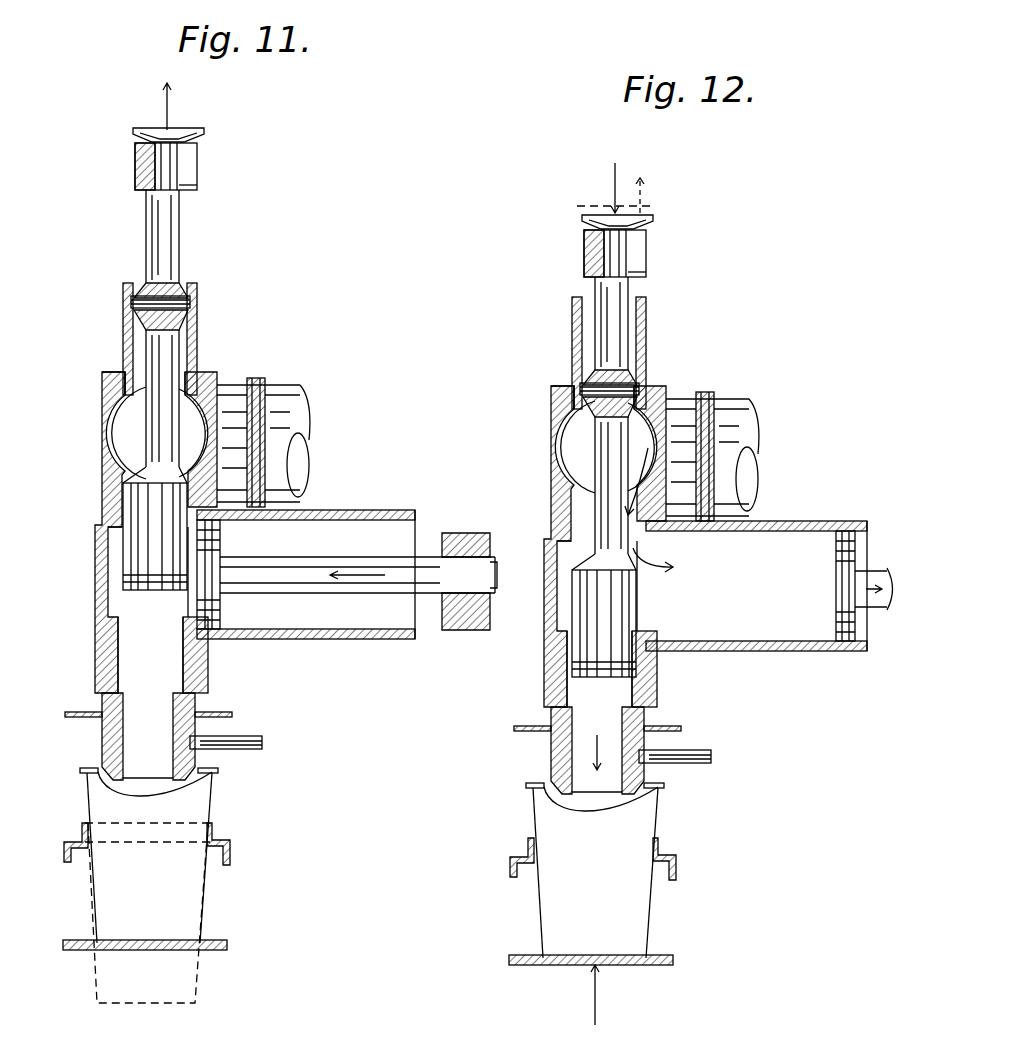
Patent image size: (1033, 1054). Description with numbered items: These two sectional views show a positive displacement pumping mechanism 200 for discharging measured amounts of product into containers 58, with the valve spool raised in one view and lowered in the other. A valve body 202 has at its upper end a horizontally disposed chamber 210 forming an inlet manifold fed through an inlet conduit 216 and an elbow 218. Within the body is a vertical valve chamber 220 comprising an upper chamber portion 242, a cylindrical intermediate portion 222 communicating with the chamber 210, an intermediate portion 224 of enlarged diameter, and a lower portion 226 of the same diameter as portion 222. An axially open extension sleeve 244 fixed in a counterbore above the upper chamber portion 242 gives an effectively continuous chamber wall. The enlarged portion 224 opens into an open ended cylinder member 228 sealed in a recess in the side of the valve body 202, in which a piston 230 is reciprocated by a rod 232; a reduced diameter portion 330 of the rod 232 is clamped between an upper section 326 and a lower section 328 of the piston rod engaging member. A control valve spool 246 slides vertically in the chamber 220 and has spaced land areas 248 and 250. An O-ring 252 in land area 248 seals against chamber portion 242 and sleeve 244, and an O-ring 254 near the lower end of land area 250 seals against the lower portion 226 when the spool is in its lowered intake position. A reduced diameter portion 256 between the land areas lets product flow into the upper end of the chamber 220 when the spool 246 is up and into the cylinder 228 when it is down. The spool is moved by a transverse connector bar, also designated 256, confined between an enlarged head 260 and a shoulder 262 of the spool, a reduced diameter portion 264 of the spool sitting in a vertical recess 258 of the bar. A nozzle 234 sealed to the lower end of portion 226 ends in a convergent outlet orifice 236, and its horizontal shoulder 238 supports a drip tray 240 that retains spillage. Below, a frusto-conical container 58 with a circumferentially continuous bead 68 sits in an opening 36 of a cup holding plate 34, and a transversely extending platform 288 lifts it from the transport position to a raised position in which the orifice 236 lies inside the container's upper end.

In FIG. 11, the positive displacement pumping mechanism 200 is at (262, 437).
In FIG. 12, the positive displacement pumping mechanism 200 is at (682, 498).
In FIG. 11, the valve body 202 is at (108, 487).
In FIG. 12, the valve body 202 is at (558, 492).
In FIG. 11, the horizontally disposed chamber 210 is at (115, 428).
In FIG. 12, the horizontally disposed chamber 210 is at (562, 440).
In FIG. 11, the inlet conduit 216 is at (245, 385).
In FIG. 12, the inlet conduit 216 is at (680, 398).
In FIG. 11, the elbow 218 is at (288, 400).
In FIG. 12, the elbow 218 is at (738, 418).
In FIG. 11, the valve chamber 220 is at (96, 576).
In FIG. 12, the valve chamber 220 is at (551, 631).
In FIG. 11, the cylindrical intermediate portion 222 is at (135, 512).
In FIG. 12, the cylindrical intermediate portion 222 is at (578, 513).
In FIG. 11, the enlarged diameter intermediate portion 224 is at (105, 547).
In FIG. 12, the enlarged diameter intermediate portion 224 is at (557, 550).
In FIG. 11, the cylindrical lower portion 226 is at (118, 640).
In FIG. 12, the cylindrical lower portion 226 is at (578, 655).
In FIG. 11, the open ended cylinder member 228 is at (350, 512).
In FIG. 12, the open ended cylinder member 228 is at (803, 522).
In FIG. 11, the piston 230 is at (222, 548).
In FIG. 12, the piston 230 is at (838, 556).
In FIG. 11, the rod 232 is at (305, 583).
In FIG. 12, the rod 232 is at (855, 620).
In FIG. 11, the nozzle 234 is at (104, 740).
In FIG. 12, the nozzle 234 is at (548, 755).
In FIG. 11, the convergent outlet orifice 236 is at (130, 790).
In FIG. 12, the convergent outlet orifice 236 is at (601, 799).
In FIG. 11, the shoulder 238 is at (102, 712).
In FIG. 12, the shoulder 238 is at (650, 730).
In FIG. 11, the drip tray 240 is at (225, 715).
In FIG. 12, the drip tray 240 is at (705, 730).
In FIG. 11, the upper chamber portion 242 is at (108, 392).
In FIG. 12, the upper chamber portion 242 is at (558, 420).
In FIG. 11, the extension sleeve 244 is at (123, 343).
In FIG. 12, the extension sleeve 244 is at (573, 323).
In FIG. 11, the control valve spool 246 is at (191, 241).
In FIG. 12, the control valve spool 246 is at (639, 341).
In FIG. 11, the land area 248 is at (190, 296).
In FIG. 12, the land area 248 is at (640, 385).
In FIG. 11, the land area 250 is at (146, 588).
In FIG. 12, the land area 250 is at (625, 605).
In FIG. 11, the O-ring 252 is at (132, 302).
In FIG. 12, the O-ring 252 is at (578, 388).
In FIG. 11, the O-ring 254 is at (120, 585).
In FIG. 12, the O-ring 254 is at (562, 672).
In FIG. 11, the reduced diameter portion 256 is at (136, 163).
In FIG. 12, the reduced diameter portion 256 is at (582, 250).
In FIG. 11, the vertical recess 258 is at (198, 162).
In FIG. 12, the vertical recess 258 is at (640, 250).
In FIG. 11, the enlarged head 260 is at (190, 128).
In FIG. 12, the enlarged head 260 is at (585, 220).
In FIG. 11, the shoulder 262 is at (185, 186).
In FIG. 12, the shoulder 262 is at (625, 272).
In FIG. 11, the reduced diameter portion 264 is at (170, 152).
In FIG. 12, the reduced diameter portion 264 is at (615, 245).
In FIG. 11, the platform 288 is at (210, 950).
In FIG. 12, the platform 288 is at (682, 962).
In FIG. 11, the upper section 326 is at (458, 535).
In FIG. 11, the lower section 328 is at (458, 625).
In FIG. 11, the reduced diameter portion 330 is at (455, 567).
In FIG. 11, the cup holding plate 34 is at (232, 855).
In FIG. 12, the cup holding plate 34 is at (518, 862).
In FIG. 11, the opening 36 is at (208, 822).
In FIG. 12, the opening 36 is at (660, 838).
In FIG. 11, the container 58 is at (203, 893).
In FIG. 12, the container 58 is at (628, 910).
In FIG. 11, the bead 68 is at (82, 770).
In FIG. 12, the bead 68 is at (530, 786).